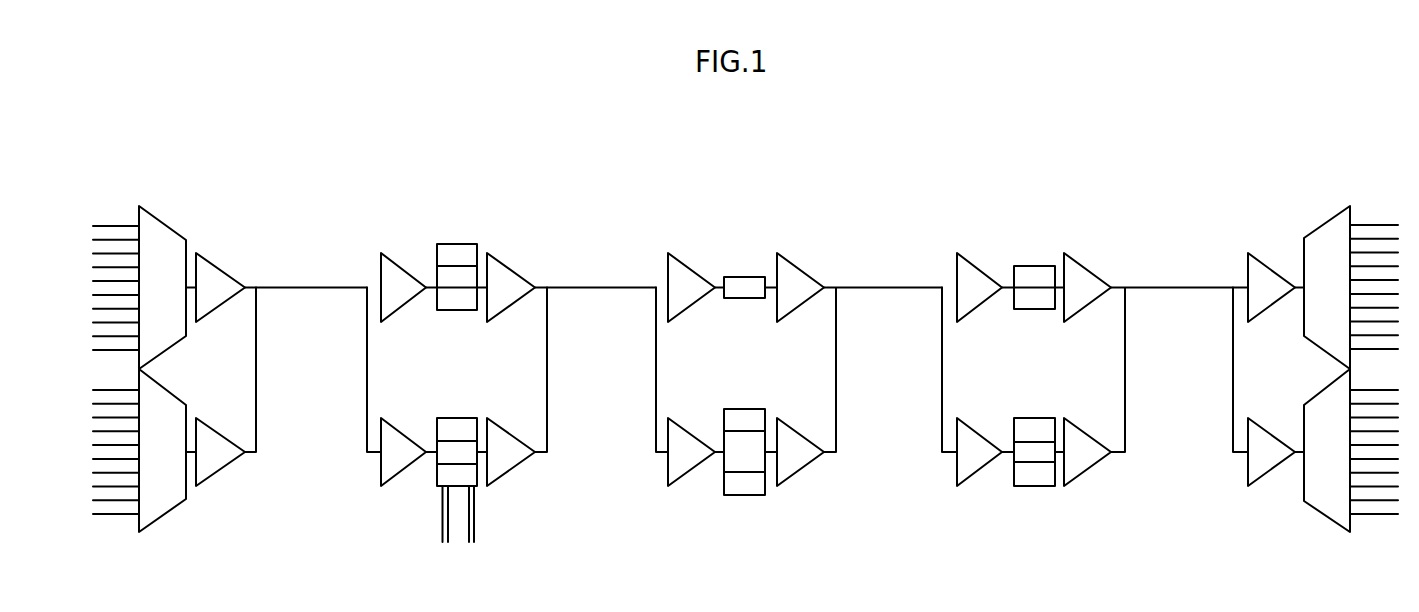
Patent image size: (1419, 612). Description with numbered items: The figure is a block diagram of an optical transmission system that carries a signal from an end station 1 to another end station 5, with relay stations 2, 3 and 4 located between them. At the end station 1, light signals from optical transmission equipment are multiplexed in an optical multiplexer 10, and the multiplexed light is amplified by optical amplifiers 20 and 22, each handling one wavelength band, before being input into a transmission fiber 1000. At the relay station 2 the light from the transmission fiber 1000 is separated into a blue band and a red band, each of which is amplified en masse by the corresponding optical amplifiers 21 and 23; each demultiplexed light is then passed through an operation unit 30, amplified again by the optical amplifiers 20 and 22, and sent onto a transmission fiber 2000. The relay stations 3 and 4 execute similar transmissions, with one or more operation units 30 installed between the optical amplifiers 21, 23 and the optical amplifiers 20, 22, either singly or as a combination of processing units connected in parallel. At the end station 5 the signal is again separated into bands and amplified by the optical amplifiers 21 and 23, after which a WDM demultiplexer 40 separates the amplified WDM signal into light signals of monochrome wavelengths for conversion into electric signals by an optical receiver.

The end station 1 is at (183, 354).
The relay station 2 is at (495, 186).
The relay station 3 is at (764, 186).
The relay station 4 is at (1055, 186).
The end station 5 is at (1317, 358).
The optical multiplexer 10 is at (165, 224).
The optical amplifier 20 is at (219, 268).
The optical amplifier 21 is at (405, 253).
The optical amplifier 22 is at (219, 471).
The optical amplifier 23 is at (401, 476).
The operation unit 30 is at (454, 251).
The WDM demultiplexer 40 is at (1327, 219).
The transmission fiber 1000 is at (311, 289).
The transmission fiber 2000 is at (602, 292).